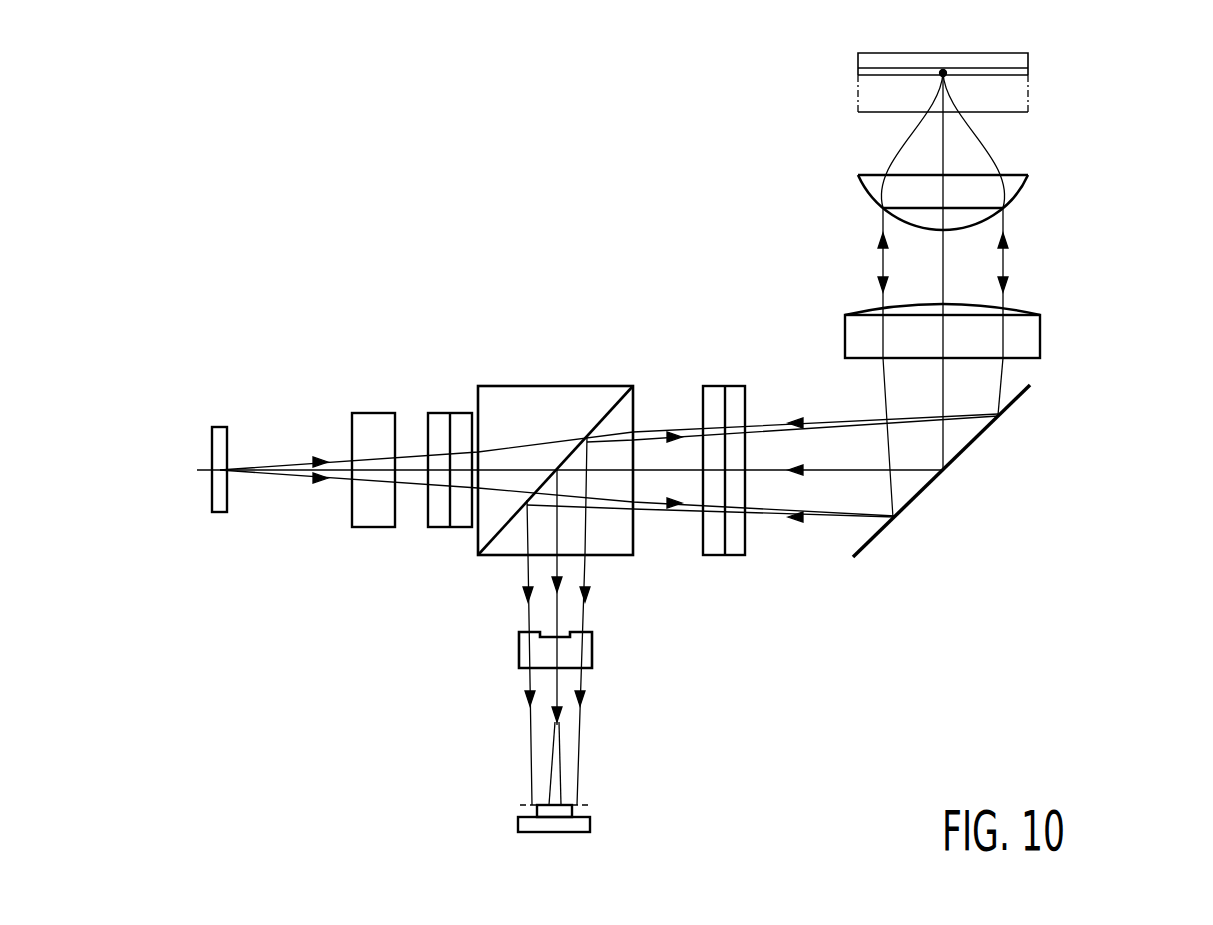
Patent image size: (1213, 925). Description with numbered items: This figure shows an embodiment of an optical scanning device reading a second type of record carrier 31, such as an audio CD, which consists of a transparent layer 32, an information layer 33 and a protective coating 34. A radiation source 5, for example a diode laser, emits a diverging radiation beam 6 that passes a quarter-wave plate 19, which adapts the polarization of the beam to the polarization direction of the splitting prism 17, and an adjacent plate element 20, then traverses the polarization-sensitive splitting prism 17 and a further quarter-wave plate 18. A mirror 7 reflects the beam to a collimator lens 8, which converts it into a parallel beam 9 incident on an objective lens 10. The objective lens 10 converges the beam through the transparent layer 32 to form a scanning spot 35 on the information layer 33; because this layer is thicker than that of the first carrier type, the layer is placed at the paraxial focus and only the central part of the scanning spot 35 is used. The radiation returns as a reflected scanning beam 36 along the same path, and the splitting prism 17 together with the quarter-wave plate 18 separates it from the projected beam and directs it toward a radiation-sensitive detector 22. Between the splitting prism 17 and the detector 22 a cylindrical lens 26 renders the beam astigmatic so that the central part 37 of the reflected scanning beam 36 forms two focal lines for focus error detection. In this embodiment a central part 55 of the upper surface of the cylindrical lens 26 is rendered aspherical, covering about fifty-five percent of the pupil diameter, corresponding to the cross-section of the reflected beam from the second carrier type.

The radiation source 5 is at (220, 426).
The diverging radiation beam 6 is at (299, 478).
The mirror 7 is at (958, 459).
The collimator lens 8 is at (1033, 337).
The parallel beam 9 is at (1005, 268).
The objective lens 10 is at (1010, 190).
The polarization-sensitive splitting prism 17 is at (543, 385).
The λ/4 plate 18 is at (718, 385).
The λ/4 plate 19 is at (445, 412).
The plate element 20 is at (373, 412).
The radiation-sensitive detector 22 is at (572, 812).
The cylindrical lens 26 is at (594, 647).
The record carrier 31 is at (1112, 90).
The transparent layer 32 is at (858, 104).
The information layer 33 is at (1030, 72).
The protective coating 34 is at (858, 62).
The scanning spot 35 is at (940, 77).
The reflected scanning beam 36 is at (878, 283).
The central part of the reflected scanning beam 37 is at (583, 743).
The central part of the upper surface of the cylindrical lens 55 is at (556, 632).